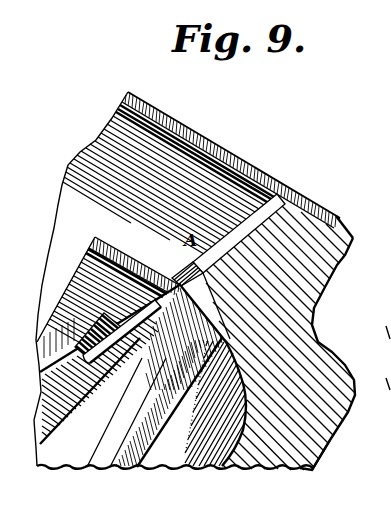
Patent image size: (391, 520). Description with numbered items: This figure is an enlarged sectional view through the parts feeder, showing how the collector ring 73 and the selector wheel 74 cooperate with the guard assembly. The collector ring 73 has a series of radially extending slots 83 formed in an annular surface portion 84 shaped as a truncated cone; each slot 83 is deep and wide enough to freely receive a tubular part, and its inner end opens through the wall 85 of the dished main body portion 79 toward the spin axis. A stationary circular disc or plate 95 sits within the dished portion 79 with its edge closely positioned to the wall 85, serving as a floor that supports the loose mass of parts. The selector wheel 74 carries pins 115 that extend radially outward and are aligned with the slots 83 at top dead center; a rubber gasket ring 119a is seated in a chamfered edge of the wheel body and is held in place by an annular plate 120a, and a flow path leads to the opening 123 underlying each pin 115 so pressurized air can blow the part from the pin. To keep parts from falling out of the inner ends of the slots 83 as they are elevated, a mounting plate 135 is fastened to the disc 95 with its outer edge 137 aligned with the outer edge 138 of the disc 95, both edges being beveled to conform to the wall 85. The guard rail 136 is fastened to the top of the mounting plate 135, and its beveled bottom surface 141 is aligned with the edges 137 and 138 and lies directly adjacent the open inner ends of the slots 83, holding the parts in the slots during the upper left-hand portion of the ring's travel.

The collector ring 73 is at (324, 286).
The selector wheel 74 is at (56, 422).
The dished main body portion 79 is at (318, 456).
The slot 83 is at (277, 206).
The annular surface portion 84 is at (242, 216).
The wall 85 is at (210, 356).
The circular disc or plate 95 is at (113, 470).
The pin 115 is at (130, 310).
The rubber gasket ring 119a is at (87, 298).
The annular plate 120a is at (97, 356).
The opening 123 is at (112, 372).
The mounting plate 135 is at (179, 402).
The guard rail 136 is at (113, 216).
The outer edge of mounting plate 137 is at (207, 302).
The outer edge of disc 138 is at (210, 322).
The beveled surface 141 is at (160, 270).